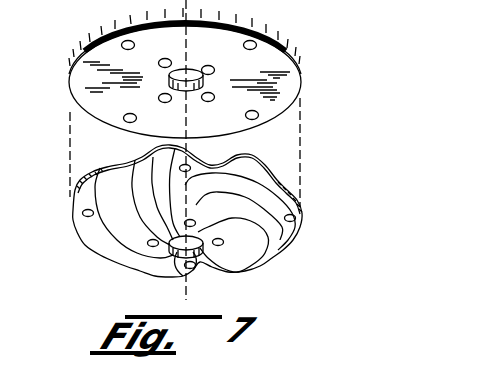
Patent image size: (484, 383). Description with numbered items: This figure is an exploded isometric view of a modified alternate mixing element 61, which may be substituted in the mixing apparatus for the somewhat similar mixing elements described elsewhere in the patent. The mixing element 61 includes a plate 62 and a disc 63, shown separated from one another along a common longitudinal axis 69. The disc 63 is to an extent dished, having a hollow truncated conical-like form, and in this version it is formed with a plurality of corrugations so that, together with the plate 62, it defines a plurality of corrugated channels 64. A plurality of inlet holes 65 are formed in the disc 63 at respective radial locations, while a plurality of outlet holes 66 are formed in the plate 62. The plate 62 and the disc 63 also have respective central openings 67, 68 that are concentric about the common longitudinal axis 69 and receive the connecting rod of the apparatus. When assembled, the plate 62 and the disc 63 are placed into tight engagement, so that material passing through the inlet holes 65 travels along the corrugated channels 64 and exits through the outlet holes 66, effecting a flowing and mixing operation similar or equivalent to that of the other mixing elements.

The mixing element 61 is at (48, 121).
The plate 62 is at (302, 65).
The disc 63 is at (209, 219).
The corrugated channels 64 is at (279, 174).
The inlet holes 65 is at (320, 222).
The outlet holes 66 is at (214, 69).
The central opening 67 is at (191, 73).
The central opening 68 is at (173, 259).
The longitudinal axis 69 is at (193, 296).